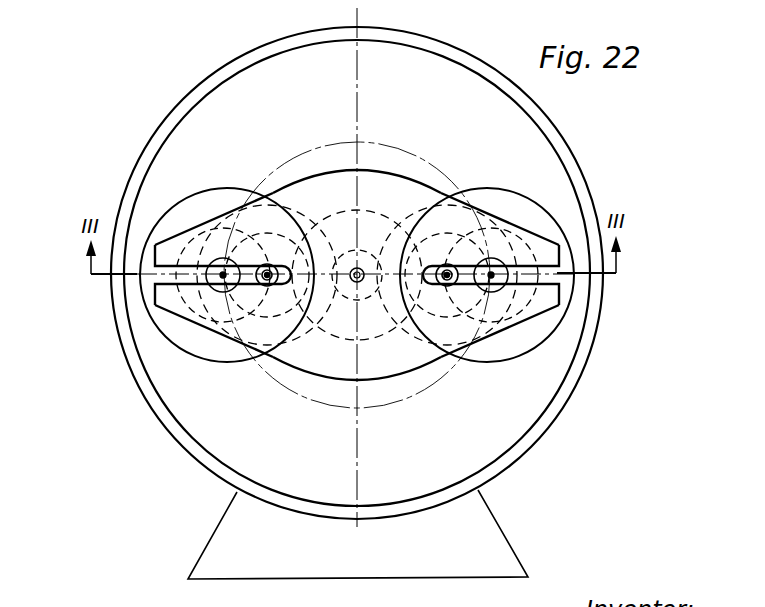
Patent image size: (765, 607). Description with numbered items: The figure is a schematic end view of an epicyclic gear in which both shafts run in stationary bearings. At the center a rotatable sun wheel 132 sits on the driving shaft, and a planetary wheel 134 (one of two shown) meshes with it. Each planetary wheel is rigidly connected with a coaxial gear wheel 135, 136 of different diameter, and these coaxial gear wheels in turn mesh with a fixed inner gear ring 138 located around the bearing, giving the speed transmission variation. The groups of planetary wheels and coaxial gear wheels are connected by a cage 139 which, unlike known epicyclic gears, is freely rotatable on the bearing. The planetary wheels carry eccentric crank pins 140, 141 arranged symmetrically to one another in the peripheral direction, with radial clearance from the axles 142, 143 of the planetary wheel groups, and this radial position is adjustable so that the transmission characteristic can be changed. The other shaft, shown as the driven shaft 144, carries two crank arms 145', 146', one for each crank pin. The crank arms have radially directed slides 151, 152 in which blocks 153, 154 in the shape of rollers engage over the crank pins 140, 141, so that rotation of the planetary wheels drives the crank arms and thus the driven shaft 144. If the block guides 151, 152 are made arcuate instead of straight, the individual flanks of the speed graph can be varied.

The sun wheel 132 is at (382, 192).
The planetary wheel 134 is at (550, 208).
The coaxial gear wheel 135 is at (150, 323).
The coaxial gear wheel 136 is at (565, 320).
The inner gear ring 138 is at (330, 185).
The cage 139 is at (280, 343).
The crank pin 140 is at (273, 195).
The crank pin 141 is at (444, 197).
The axle 142 is at (198, 212).
The axle 143 is at (508, 214).
The driven shaft 144 is at (359, 280).
The crank arm 145' is at (218, 322).
The crank arm 146' is at (494, 320).
The slide 151 is at (156, 280).
The slide 152 is at (558, 273).
The block 153 is at (266, 268).
The block 154 is at (450, 268).